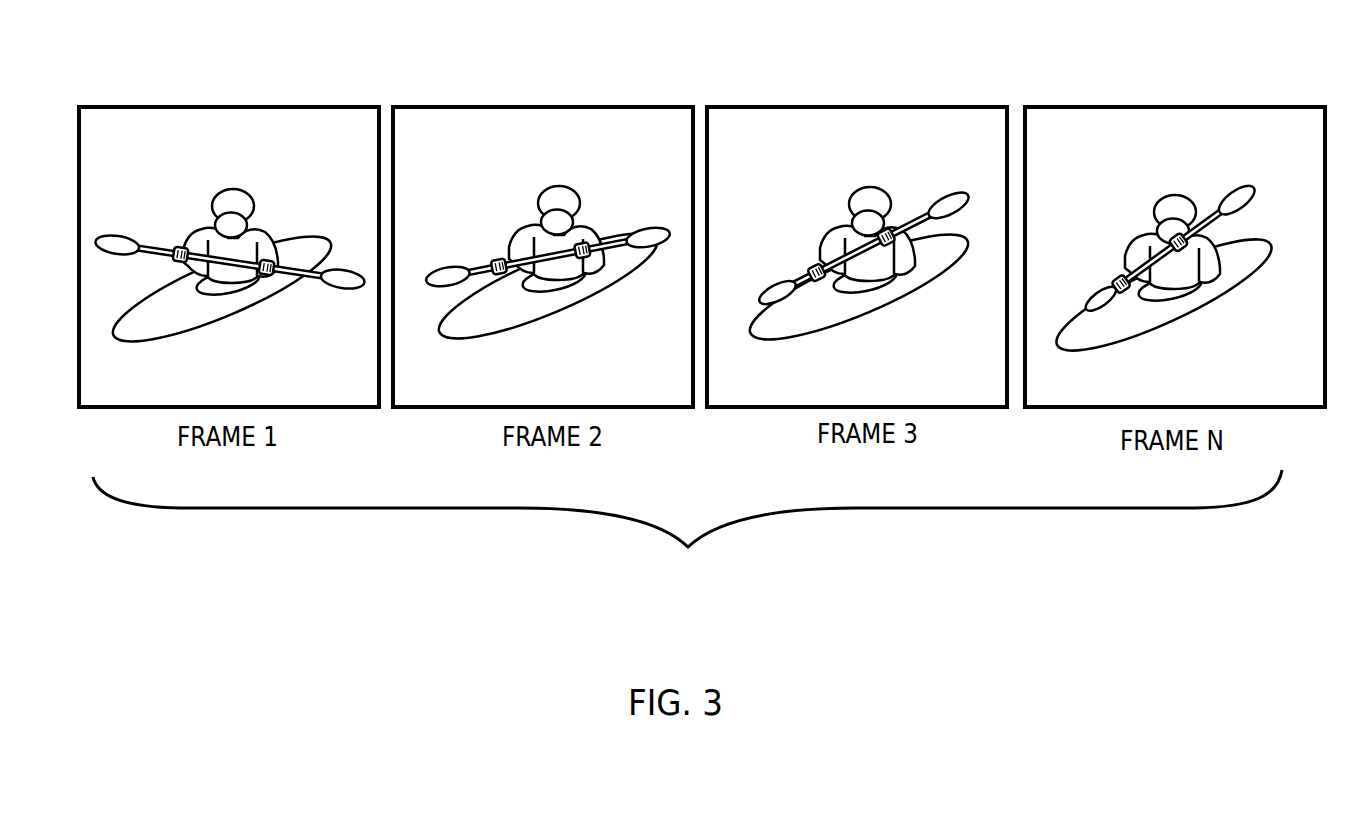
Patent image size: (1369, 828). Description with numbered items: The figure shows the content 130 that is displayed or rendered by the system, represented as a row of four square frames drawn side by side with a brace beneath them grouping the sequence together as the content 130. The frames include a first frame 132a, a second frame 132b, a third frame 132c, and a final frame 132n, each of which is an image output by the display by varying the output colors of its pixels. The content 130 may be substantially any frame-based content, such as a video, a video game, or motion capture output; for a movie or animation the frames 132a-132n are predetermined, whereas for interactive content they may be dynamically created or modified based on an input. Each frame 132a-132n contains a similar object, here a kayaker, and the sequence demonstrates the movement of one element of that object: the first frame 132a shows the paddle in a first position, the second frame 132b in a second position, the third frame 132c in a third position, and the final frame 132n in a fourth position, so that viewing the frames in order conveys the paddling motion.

The content 130 is at (687, 526).
The first frame 132a is at (333, 106).
The second frame 132b is at (651, 106).
The third frame 132c is at (943, 106).
The final frame 132n is at (1254, 106).